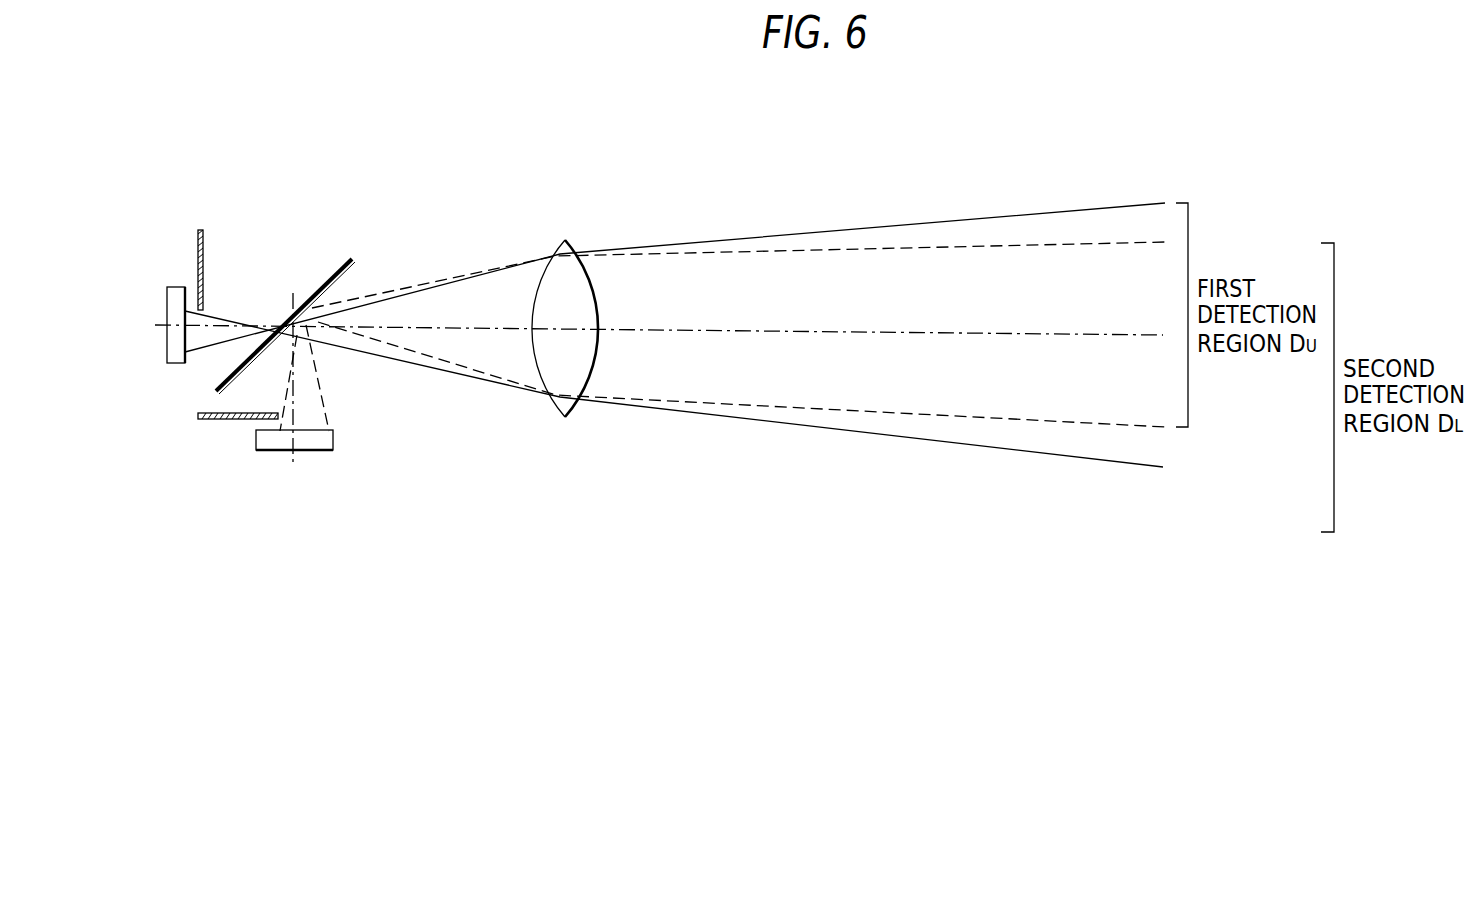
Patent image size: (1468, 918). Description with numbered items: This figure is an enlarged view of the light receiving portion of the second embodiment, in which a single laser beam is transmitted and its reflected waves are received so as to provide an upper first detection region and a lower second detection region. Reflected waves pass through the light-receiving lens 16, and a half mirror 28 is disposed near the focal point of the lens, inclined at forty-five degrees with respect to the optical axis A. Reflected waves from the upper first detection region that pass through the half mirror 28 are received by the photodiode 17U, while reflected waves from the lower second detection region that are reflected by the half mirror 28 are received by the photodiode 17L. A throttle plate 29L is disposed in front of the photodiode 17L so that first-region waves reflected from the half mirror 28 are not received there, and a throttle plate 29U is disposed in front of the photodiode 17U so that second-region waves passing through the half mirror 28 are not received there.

The light-receiving lens 16 is at (567, 280).
The photodiode 17U is at (175, 356).
The photodiode 17L is at (333, 440).
The half mirror 28 is at (343, 258).
The throttle plate 29U is at (203, 238).
The throttle plate 29L is at (212, 422).
The optical axis A is at (1074, 337).